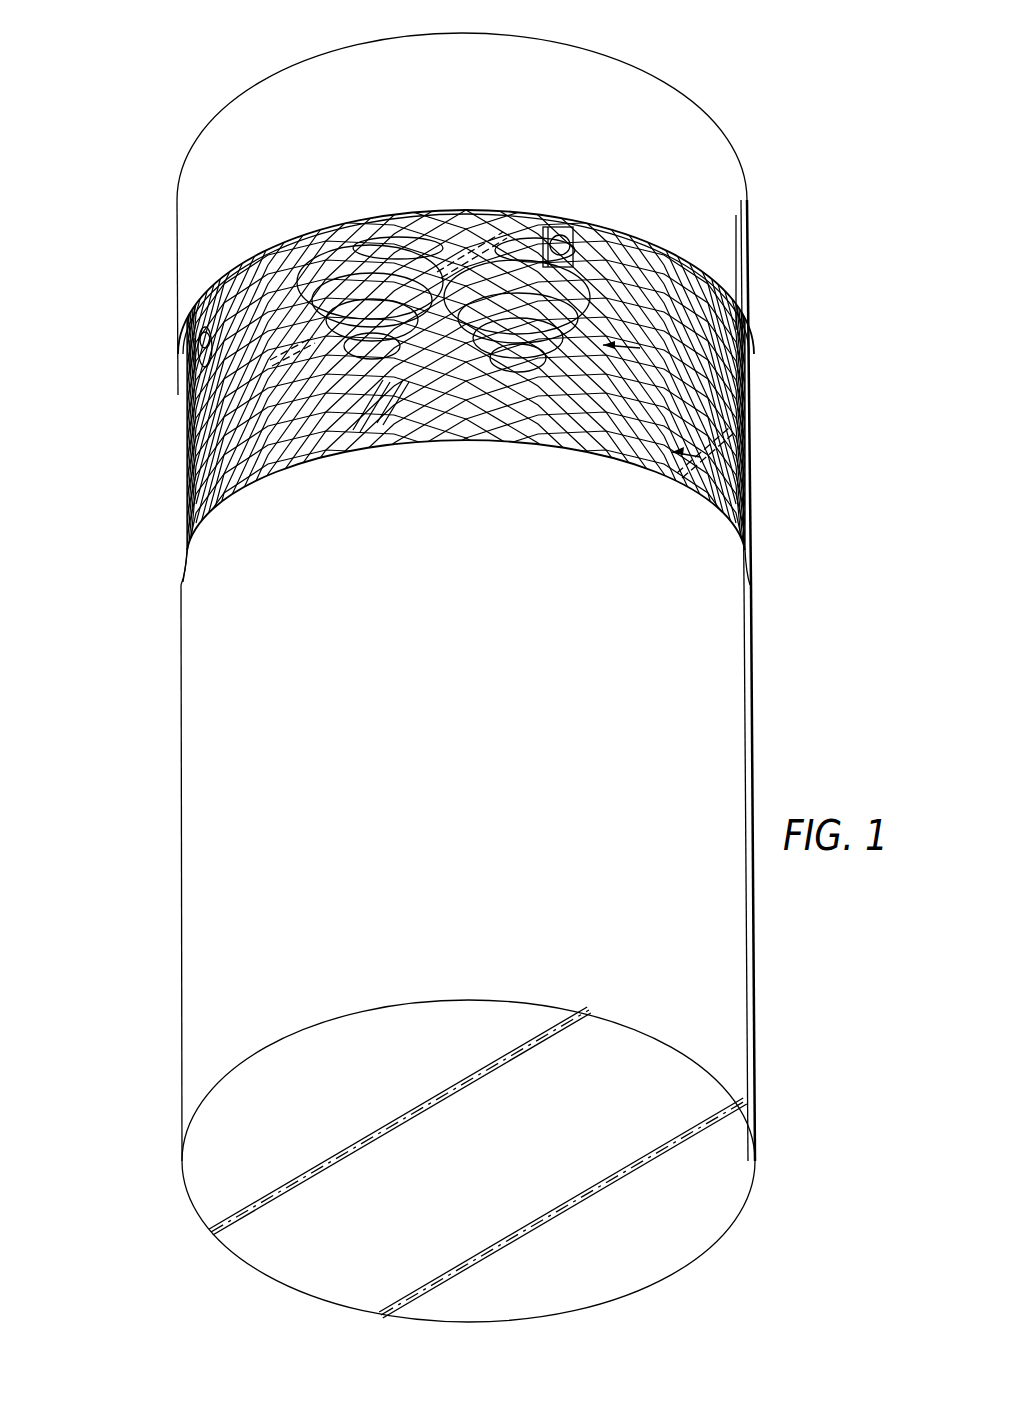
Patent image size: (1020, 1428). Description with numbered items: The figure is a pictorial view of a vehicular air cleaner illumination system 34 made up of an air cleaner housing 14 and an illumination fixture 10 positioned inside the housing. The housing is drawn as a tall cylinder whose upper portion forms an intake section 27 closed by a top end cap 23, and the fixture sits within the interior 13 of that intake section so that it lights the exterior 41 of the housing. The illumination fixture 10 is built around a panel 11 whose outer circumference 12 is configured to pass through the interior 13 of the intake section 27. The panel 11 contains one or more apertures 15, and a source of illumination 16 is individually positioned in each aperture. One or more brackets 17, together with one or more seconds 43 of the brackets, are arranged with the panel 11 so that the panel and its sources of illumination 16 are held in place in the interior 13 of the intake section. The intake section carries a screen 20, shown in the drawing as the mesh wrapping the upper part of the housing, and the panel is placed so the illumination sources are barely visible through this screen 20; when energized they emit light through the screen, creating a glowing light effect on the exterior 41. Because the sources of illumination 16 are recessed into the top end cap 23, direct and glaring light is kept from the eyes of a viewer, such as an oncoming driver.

The illumination fixture 10 is at (717, 368).
The panel 11 is at (673, 305).
The outer circumference 12 is at (742, 410).
The interior 13 is at (748, 493).
The air cleaner housing 14 is at (766, 706).
The apertures 15 is at (185, 353).
The sources of illumination 16 is at (187, 395).
The brackets 17 is at (613, 237).
The screen 20 is at (745, 460).
The top end cap 23 is at (232, 98).
The intake section 27 is at (182, 497).
The vehicular air cleaner illumination system 34 is at (675, 48).
The exterior 41 is at (92, 498).
The seconds of the brackets 43 is at (745, 437).